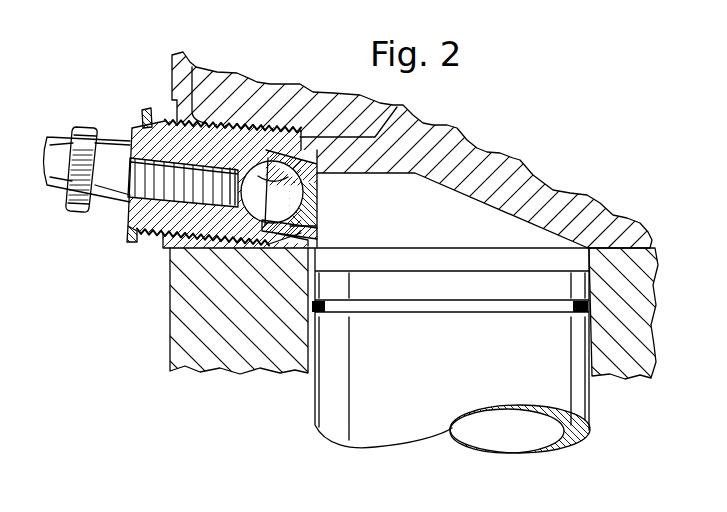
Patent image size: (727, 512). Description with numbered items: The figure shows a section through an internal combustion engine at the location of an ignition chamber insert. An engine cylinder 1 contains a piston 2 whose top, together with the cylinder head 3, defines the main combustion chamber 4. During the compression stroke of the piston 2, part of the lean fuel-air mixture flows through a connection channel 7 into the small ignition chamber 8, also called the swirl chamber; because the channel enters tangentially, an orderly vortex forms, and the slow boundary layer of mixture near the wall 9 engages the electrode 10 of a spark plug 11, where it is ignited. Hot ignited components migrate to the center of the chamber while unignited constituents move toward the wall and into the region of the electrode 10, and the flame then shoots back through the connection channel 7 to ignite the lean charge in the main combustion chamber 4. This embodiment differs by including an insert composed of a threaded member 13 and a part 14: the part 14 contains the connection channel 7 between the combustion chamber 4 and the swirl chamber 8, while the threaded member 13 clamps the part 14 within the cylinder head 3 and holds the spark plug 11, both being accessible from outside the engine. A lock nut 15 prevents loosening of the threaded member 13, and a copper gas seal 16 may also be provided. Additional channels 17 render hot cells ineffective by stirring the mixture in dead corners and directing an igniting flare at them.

The engine cylinder 1 is at (618, 362).
The piston 2 is at (436, 375).
The cylinder head 3 is at (538, 190).
The main combustion chamber 4 is at (430, 228).
The connection channel 7 is at (308, 181).
The ignition chamber 8 is at (279, 170).
The wall 9 is at (270, 147).
The electrode 10 is at (248, 162).
The spark plug 11 is at (112, 186).
The threaded member 13 is at (167, 249).
The insert part 14 is at (300, 147).
The lock nut 15 is at (141, 118).
The copper gas seal 16 is at (172, 124).
The additional channels 17 is at (304, 223).